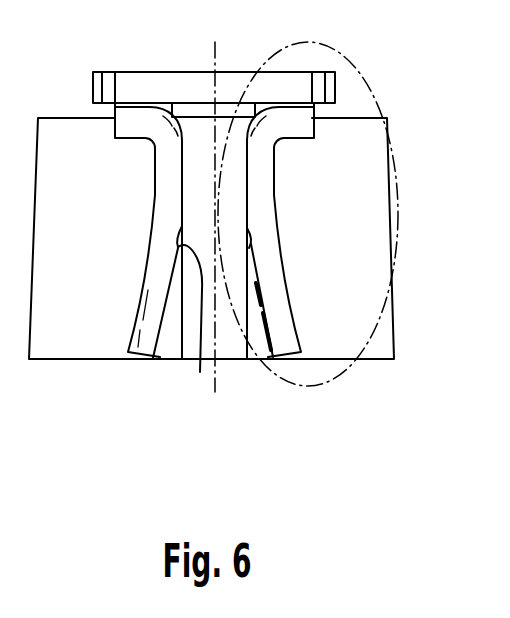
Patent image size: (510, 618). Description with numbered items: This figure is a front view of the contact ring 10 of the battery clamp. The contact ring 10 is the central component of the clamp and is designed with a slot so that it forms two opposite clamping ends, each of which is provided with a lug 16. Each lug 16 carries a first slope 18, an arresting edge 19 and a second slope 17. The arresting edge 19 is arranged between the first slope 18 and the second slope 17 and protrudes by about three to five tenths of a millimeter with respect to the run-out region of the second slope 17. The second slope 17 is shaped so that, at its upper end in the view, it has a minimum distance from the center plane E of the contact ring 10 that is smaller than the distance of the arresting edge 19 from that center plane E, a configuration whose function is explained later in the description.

The contact ring 10 is at (383, 332).
The lug 16 is at (260, 166).
The second slope 17 is at (252, 238).
The first slope 18 is at (168, 338).
The arresting edge 19 is at (200, 372).
The center plane E is at (216, 379).